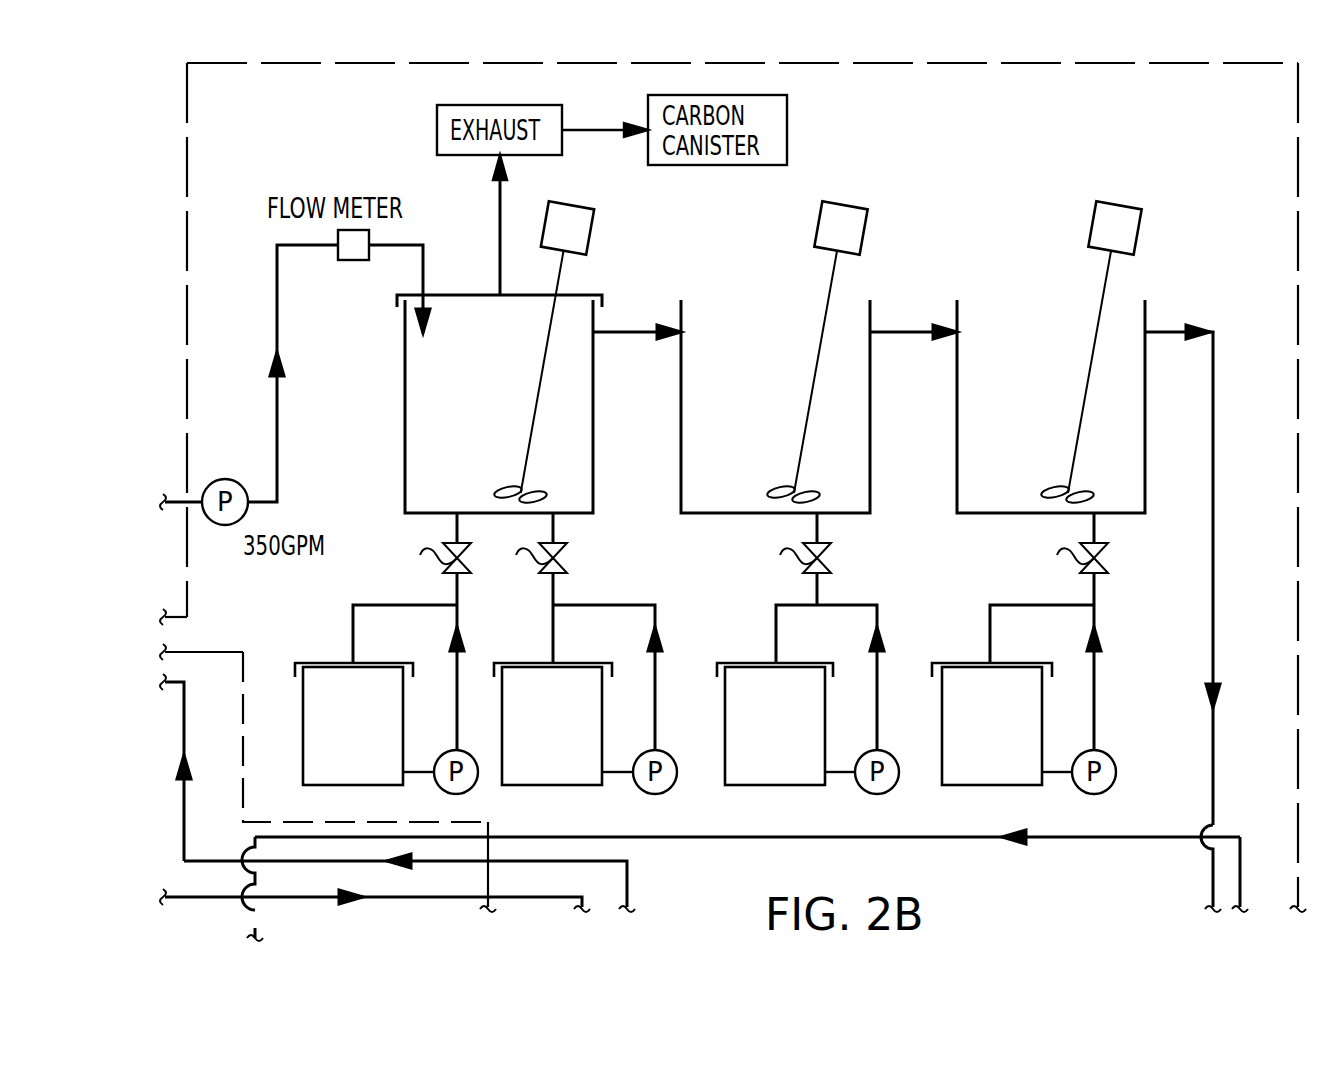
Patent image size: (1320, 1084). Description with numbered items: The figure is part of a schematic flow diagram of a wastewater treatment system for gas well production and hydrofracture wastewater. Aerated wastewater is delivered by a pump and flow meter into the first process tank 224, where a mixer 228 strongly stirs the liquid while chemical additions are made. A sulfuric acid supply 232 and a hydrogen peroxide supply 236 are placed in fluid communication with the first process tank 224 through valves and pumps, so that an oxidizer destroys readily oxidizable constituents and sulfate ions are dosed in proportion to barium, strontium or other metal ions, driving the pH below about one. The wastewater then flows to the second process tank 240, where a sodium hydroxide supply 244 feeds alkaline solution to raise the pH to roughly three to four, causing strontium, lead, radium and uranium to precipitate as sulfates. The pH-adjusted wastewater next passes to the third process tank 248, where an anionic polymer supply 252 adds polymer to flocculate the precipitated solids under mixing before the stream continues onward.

The first process tank 224 is at (405, 454).
The mixer 228 is at (593, 222).
The sulfuric acid supply 232 is at (322, 663).
The hydrogen peroxide supply 236 is at (553, 787).
The second process tank 240 is at (870, 318).
The sodium hydroxide supply 244 is at (742, 663).
The third process tank 248 is at (1145, 318).
The anionic polymer supply 252 is at (1042, 702).